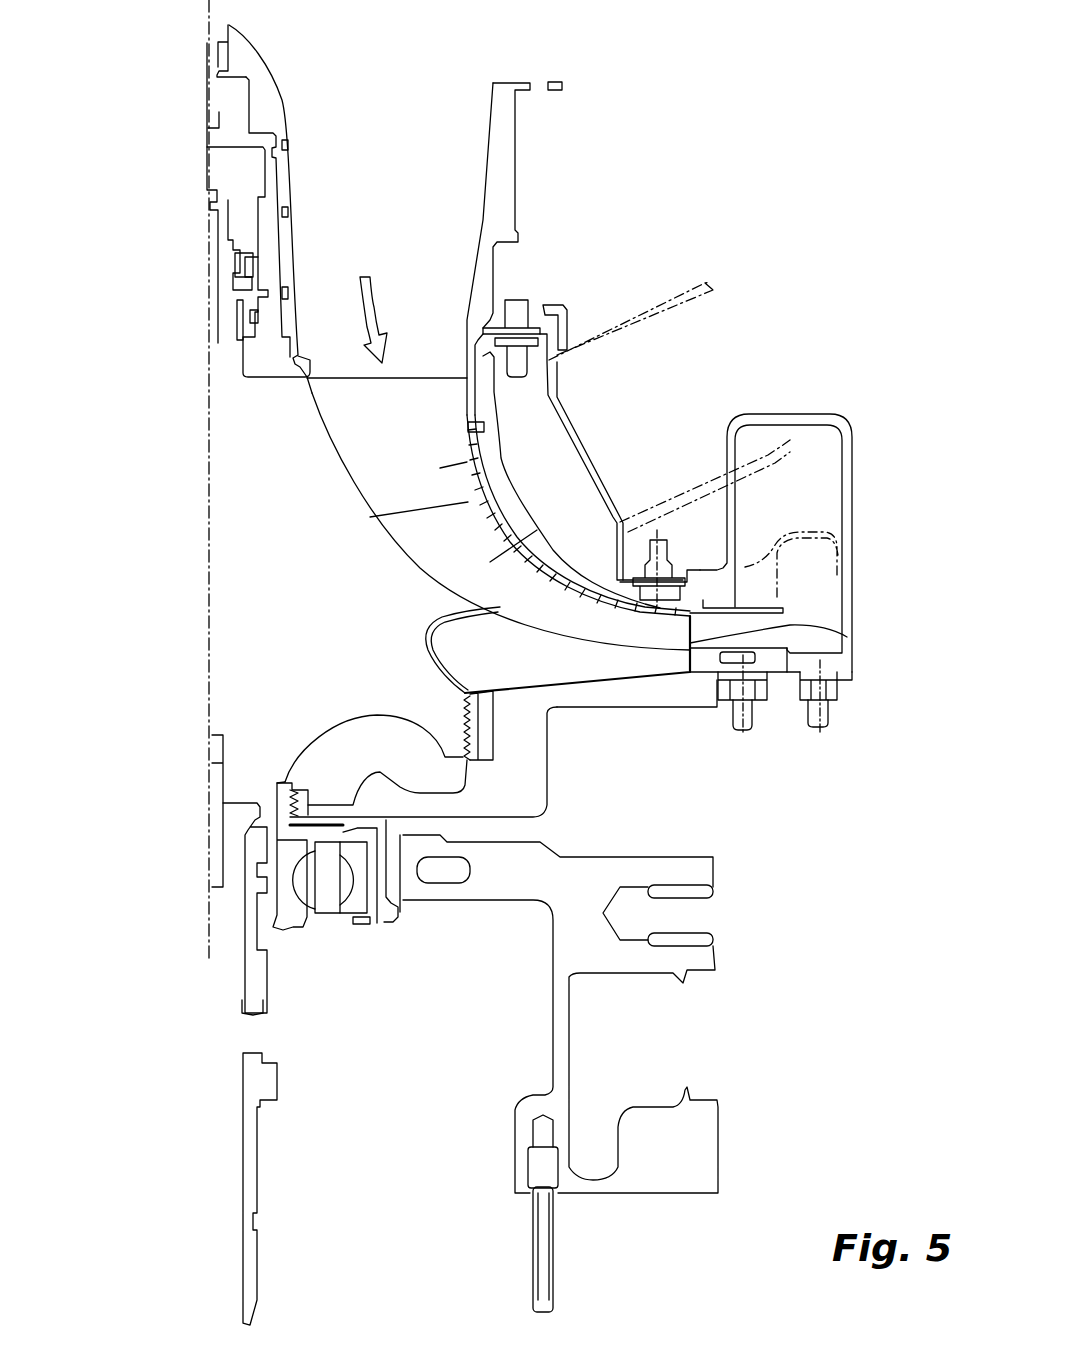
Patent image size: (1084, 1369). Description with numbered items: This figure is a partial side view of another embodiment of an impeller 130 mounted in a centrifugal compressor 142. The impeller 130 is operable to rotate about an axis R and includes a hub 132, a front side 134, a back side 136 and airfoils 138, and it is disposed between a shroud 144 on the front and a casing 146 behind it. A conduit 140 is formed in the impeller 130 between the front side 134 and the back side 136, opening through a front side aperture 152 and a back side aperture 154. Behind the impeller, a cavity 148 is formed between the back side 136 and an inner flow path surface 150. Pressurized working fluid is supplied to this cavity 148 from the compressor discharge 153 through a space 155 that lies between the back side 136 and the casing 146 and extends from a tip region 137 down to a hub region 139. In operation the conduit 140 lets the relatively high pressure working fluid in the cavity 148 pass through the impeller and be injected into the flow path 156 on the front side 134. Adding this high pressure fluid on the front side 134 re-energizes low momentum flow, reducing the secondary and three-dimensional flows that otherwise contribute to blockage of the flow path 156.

The axis R is at (204, 64).
The impeller 130 is at (157, 370).
The hub 132 is at (260, 477).
The front side 134 is at (417, 228).
The back side 136 is at (533, 680).
The tip region 137 is at (703, 630).
The airfoils 138 is at (482, 461).
The hub region 139 is at (198, 620).
The conduit 140 is at (425, 630).
The compressor 142 is at (640, 77).
The shroud 144 is at (573, 580).
The casing 146 is at (550, 780).
The cavity 148 is at (495, 695).
The inner flow path surface 150 is at (347, 463).
The front side aperture 152 is at (480, 613).
The compressor discharge 153 is at (850, 641).
The back side aperture 154 is at (465, 705).
The space 155 is at (647, 680).
The flow path 156 is at (380, 300).